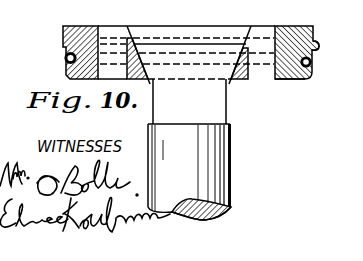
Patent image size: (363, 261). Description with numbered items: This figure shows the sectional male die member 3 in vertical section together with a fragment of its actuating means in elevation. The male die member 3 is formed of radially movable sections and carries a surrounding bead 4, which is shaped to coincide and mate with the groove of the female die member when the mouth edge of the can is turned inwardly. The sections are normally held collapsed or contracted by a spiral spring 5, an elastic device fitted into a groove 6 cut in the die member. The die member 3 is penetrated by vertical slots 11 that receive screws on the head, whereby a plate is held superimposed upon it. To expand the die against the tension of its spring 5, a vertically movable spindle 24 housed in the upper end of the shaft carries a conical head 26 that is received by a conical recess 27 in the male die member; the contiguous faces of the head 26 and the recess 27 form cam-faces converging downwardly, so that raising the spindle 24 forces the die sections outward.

The sectional male die member 3 is at (291, 32).
The bead 4 is at (319, 44).
The spiral spring 5 is at (311, 63).
The groove 6 is at (292, 74).
The vertical slots 11 is at (109, 33).
The spindle 24 is at (226, 168).
The conical head 26 is at (215, 62).
The conical recess 27 is at (247, 47).